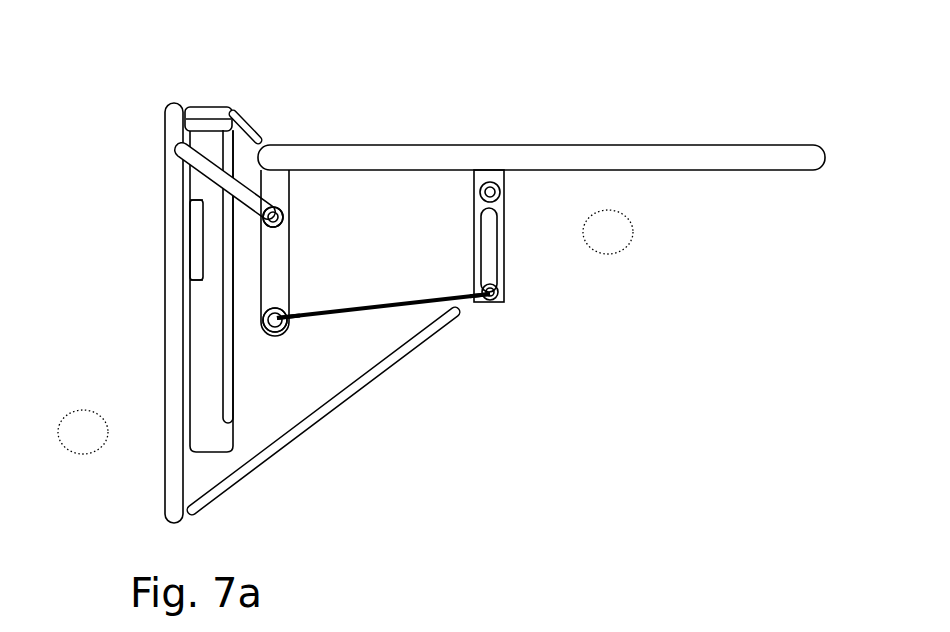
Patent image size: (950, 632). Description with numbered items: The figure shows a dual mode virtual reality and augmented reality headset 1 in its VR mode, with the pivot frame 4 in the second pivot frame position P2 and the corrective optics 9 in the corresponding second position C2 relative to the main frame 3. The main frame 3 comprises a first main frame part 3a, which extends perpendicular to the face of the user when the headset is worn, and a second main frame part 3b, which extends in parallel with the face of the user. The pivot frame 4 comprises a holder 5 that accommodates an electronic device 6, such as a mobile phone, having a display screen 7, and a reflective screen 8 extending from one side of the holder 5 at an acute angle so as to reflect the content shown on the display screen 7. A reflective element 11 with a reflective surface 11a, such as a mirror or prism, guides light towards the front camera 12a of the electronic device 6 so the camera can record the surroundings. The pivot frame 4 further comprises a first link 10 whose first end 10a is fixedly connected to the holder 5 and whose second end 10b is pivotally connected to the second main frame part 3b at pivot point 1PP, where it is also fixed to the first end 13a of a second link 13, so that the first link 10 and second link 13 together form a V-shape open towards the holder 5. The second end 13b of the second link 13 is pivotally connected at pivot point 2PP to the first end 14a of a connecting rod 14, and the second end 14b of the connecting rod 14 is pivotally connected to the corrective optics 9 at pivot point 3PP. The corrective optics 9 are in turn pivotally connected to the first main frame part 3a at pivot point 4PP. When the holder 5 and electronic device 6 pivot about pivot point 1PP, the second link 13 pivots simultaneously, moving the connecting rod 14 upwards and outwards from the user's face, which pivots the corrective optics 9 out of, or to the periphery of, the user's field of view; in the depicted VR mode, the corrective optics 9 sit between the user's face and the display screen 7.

The dual mode virtual reality and augmented reality headset 1 is at (180, 78).
The main frame 3 is at (540, 144).
The first main frame part 3a is at (398, 160).
The second main frame part 3b is at (298, 145).
The pivot frame 4 is at (137, 153).
The holder 5 is at (185, 393).
The electronic device 6 is at (205, 338).
The display screen 7 is at (234, 405).
The reflective screen 8 is at (342, 402).
The corrective optics 9 is at (490, 240).
The first link 10 is at (244, 208).
The first end of the first link 10a is at (210, 188).
The second end of the first link 10b is at (187, 267).
The reflective element 11 is at (235, 112).
The reflective surface 11a is at (249, 129).
The front camera 12a is at (193, 147).
The second link 13 is at (265, 280).
The first end of the second link 13a is at (288, 236).
The second end of the second link 13b is at (263, 344).
The connecting rod 14 is at (405, 306).
The first end of the connecting rod 14a is at (290, 300).
The second end of the connecting rod 14b is at (513, 287).
The pivot point 1PP is at (275, 185).
The pivot point 2PP is at (287, 328).
The pivot point 3PP is at (493, 300).
The pivot point 4PP is at (505, 192).
The second position C2 is at (608, 232).
The second pivot frame position P2 is at (83, 432).